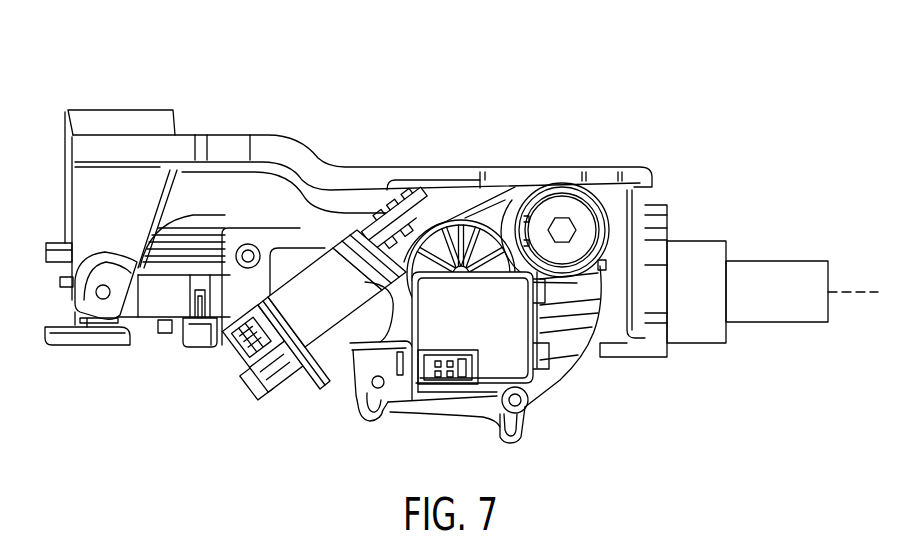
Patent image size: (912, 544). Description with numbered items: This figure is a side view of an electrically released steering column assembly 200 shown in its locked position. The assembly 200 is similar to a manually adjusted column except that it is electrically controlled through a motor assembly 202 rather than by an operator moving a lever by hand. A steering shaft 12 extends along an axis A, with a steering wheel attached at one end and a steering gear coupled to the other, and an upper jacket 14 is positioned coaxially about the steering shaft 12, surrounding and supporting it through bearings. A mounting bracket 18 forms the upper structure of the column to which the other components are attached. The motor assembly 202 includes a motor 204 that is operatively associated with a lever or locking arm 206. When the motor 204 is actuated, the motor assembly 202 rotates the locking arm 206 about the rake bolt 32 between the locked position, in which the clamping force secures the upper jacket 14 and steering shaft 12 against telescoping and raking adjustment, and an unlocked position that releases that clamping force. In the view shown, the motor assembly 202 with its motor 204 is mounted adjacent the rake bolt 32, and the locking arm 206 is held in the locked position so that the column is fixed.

The steering column assembly 200 is at (735, 81).
The mounting bracket 18 is at (353, 167).
The locking arm 206 is at (512, 218).
The rake bolt 32 is at (565, 230).
The upper jacket 14 is at (692, 252).
The steering shaft 12 is at (780, 272).
The axis A is at (845, 288).
The motor 204 is at (297, 308).
The motor assembly 202 is at (336, 398).